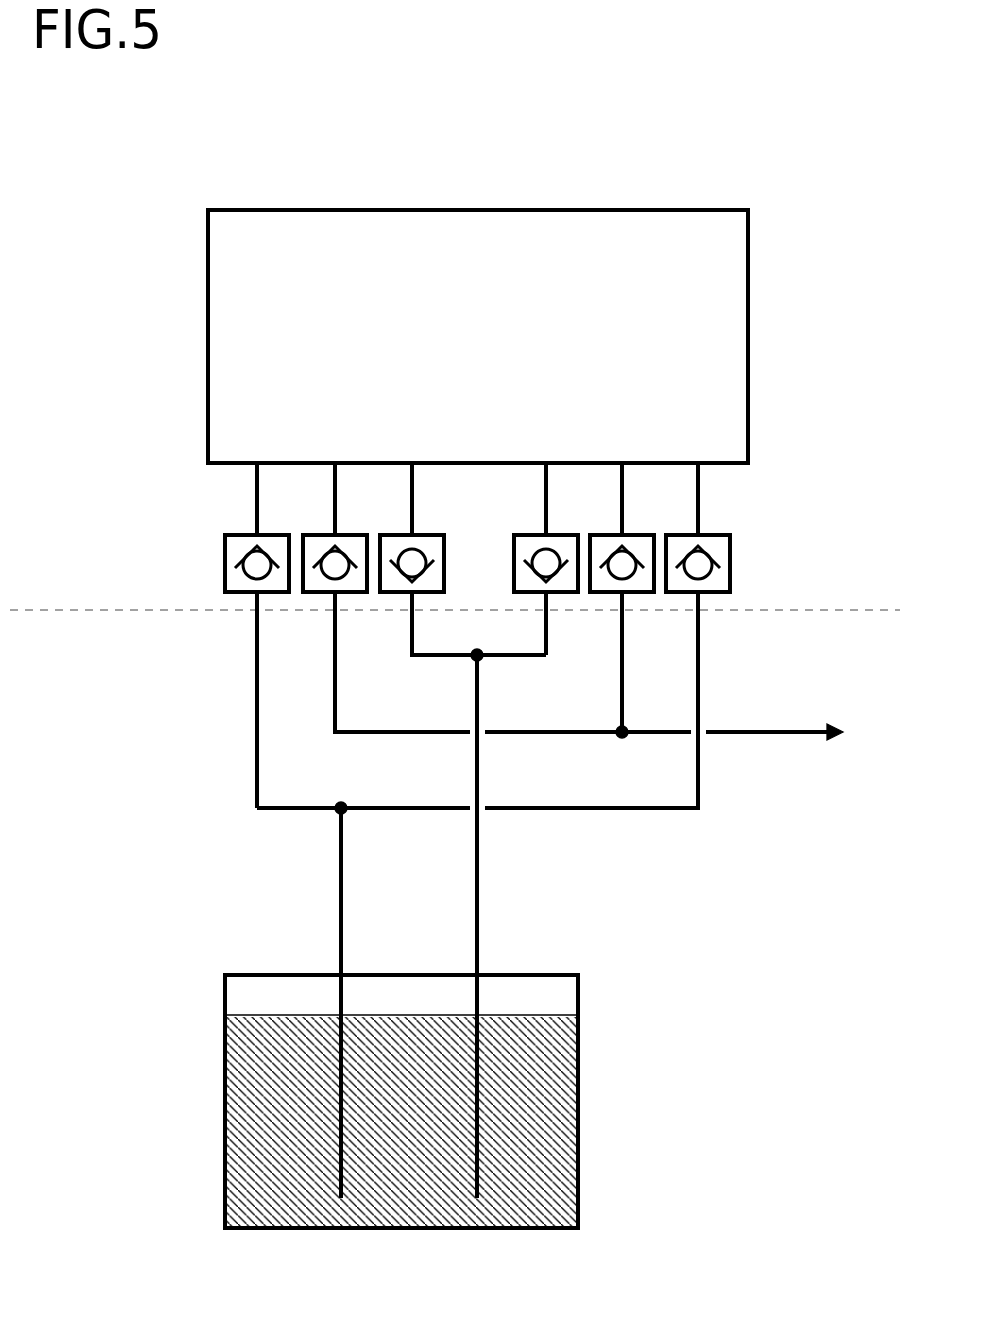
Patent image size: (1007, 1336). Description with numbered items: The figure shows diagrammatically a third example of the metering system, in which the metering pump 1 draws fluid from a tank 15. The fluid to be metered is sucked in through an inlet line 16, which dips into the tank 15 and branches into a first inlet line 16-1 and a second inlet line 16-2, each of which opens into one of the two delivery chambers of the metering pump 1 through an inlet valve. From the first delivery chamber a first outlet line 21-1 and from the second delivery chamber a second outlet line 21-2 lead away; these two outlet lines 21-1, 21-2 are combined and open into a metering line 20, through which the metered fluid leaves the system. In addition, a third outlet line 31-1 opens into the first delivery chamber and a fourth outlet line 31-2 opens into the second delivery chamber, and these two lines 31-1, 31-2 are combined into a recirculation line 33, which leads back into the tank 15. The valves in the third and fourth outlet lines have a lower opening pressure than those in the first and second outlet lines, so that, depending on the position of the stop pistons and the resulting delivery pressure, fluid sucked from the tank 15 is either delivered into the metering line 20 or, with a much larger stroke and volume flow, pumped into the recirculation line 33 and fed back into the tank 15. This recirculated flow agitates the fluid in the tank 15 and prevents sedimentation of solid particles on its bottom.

The metering pump 1 is at (527, 228).
The third outlet line 31-1 is at (258, 630).
The fourth outlet line 31-2 is at (700, 618).
The first outlet line 21-1 is at (337, 702).
The second outlet line 21-2 is at (623, 686).
The first inlet line 16-1 is at (415, 643).
The second inlet line 16-2 is at (546, 607).
The metering line 20 is at (772, 735).
The inlet line 16 is at (480, 895).
The recirculation line 33 is at (341, 900).
The tank 15 is at (578, 1110).